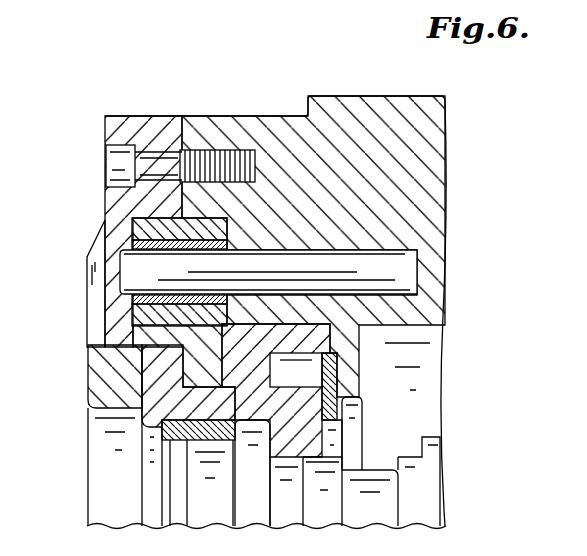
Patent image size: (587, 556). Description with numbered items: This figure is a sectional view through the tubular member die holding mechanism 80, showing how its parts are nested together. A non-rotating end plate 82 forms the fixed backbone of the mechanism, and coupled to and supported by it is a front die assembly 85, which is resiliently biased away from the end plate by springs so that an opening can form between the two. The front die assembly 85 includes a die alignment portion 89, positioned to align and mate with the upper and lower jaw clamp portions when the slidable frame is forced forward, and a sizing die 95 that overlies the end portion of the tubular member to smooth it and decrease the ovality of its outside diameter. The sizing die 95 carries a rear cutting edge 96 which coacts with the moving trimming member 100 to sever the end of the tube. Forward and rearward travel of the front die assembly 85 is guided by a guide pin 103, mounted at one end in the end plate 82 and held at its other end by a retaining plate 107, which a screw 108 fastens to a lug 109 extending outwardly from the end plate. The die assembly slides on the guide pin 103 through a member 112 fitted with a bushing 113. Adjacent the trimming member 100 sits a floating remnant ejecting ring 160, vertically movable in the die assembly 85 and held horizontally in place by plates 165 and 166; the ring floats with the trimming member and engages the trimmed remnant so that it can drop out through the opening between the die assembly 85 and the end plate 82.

The tubular member die holding mechanism 80 is at (156, 94).
The non-rotating end plate 82 is at (420, 228).
The front die assembly 85 is at (92, 312).
The die alignment portion 89 is at (102, 381).
The sizing die 95 is at (195, 430).
The rear cutting edge 96 is at (237, 424).
The trimming member 100 is at (322, 510).
The guide pin 103 is at (398, 270).
The retaining plate 107 is at (120, 203).
The screw 108 is at (168, 162).
The lug 109 is at (242, 140).
The member 112 is at (203, 310).
The bushing 113 is at (228, 243).
The floating remnant ejecting ring 160 is at (297, 440).
The plate 165 is at (296, 370).
The plate 166 is at (333, 407).